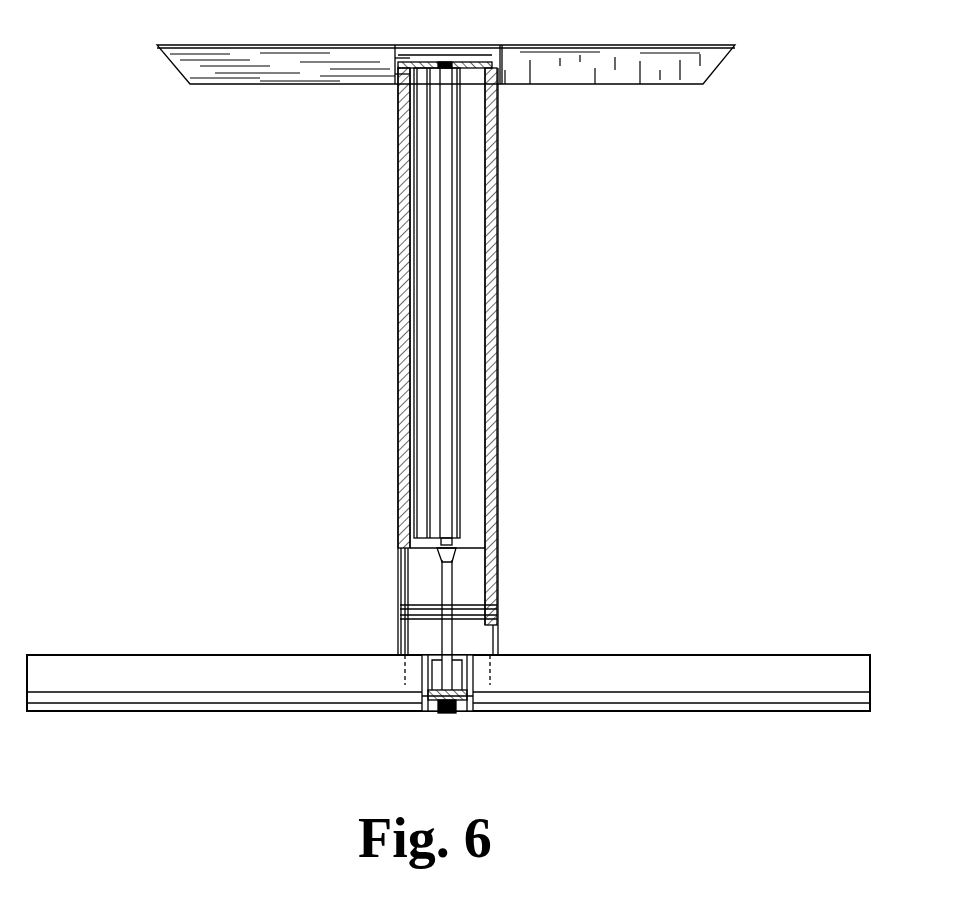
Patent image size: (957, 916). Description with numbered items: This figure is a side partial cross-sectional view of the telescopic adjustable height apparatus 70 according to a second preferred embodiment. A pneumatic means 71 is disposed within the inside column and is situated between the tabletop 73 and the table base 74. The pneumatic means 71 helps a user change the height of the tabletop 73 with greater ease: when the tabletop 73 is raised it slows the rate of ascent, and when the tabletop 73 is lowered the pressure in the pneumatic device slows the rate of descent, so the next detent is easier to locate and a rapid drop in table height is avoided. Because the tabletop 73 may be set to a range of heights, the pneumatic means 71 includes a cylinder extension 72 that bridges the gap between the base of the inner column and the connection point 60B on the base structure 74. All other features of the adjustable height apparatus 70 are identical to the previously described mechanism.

The telescopic adjustable height apparatus 70 is at (245, 274).
The pneumatic means 71 is at (438, 495).
The cylinder extension 72 is at (445, 579).
The tabletop 73 is at (712, 63).
The table base 74 is at (862, 676).
The connection point 60B is at (420, 690).